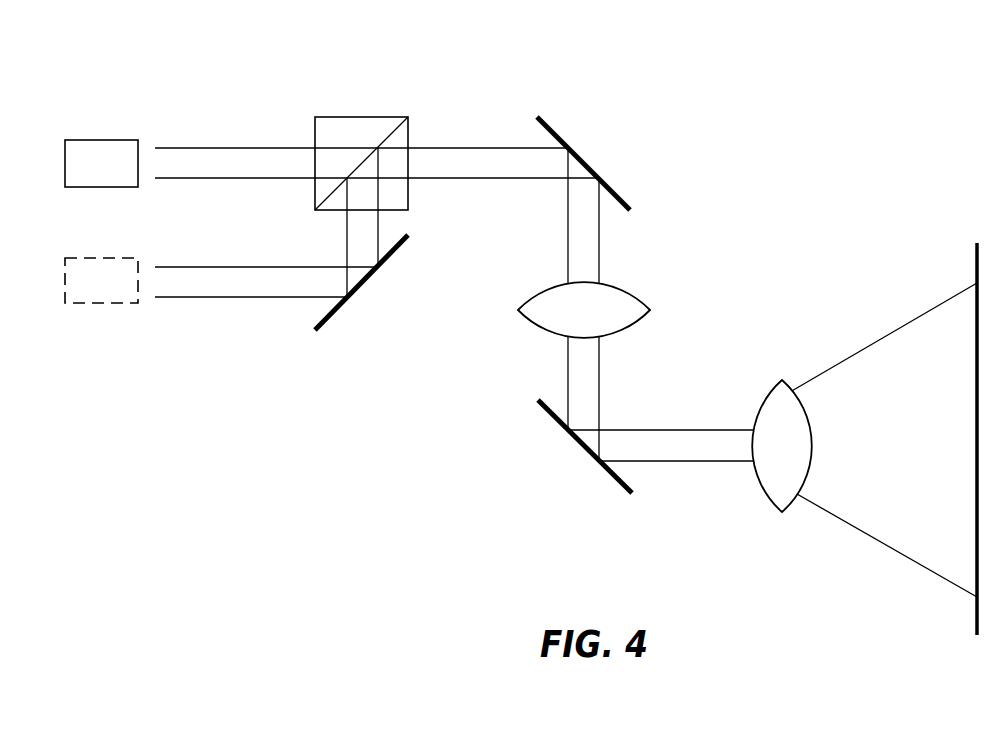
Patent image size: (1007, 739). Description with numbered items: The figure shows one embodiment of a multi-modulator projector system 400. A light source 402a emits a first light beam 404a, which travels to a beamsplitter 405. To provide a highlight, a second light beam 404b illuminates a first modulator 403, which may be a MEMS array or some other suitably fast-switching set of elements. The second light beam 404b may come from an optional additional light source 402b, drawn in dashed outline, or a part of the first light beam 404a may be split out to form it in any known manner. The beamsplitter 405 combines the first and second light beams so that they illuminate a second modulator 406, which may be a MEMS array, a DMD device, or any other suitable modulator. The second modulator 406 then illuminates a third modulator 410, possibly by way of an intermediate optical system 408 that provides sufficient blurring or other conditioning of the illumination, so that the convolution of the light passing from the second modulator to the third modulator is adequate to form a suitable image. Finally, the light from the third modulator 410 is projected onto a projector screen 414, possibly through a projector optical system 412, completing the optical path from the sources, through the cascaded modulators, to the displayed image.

The multi-modulator system 400 is at (588, 60).
The light source 402a is at (88, 140).
The additional light source 402b is at (88, 258).
The first modulator 403 is at (330, 322).
The first light beam 404a is at (196, 147).
The second light beam 404b is at (196, 266).
The beamsplitter 405 is at (365, 117).
The second modulator 406 is at (552, 127).
The intermediate optical system 408 is at (626, 290).
The third modulator 410 is at (610, 478).
The projector optical system 412 is at (774, 386).
The projector screen 414 is at (973, 270).